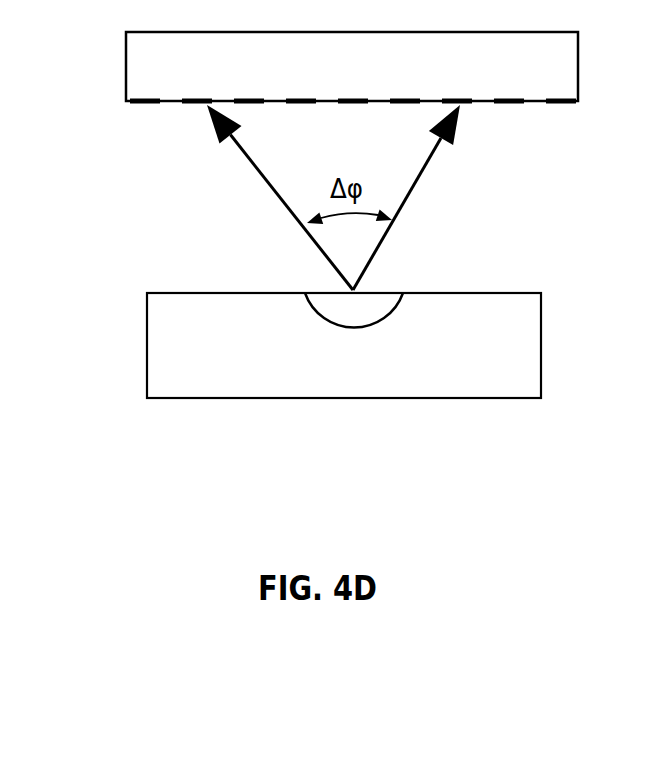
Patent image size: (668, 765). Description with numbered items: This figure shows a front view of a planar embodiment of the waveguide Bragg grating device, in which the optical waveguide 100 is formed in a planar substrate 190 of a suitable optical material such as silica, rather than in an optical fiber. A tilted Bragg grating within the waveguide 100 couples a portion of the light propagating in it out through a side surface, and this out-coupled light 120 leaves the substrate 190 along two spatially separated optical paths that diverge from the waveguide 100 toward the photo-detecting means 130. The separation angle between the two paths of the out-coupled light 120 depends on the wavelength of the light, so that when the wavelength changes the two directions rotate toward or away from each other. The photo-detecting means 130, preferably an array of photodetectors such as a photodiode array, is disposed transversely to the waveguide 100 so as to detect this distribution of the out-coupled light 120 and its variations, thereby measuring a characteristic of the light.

The photo-detecting means 130 is at (125, 63).
The out-coupled light 120 is at (475, 220).
The planar substrate 190 is at (541, 320).
The optical waveguide 100 is at (317, 317).